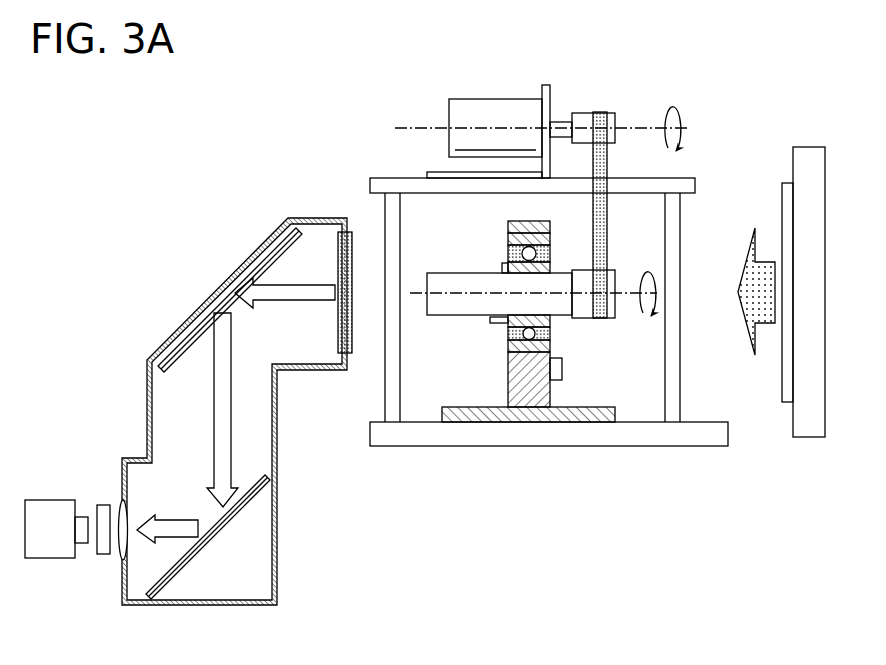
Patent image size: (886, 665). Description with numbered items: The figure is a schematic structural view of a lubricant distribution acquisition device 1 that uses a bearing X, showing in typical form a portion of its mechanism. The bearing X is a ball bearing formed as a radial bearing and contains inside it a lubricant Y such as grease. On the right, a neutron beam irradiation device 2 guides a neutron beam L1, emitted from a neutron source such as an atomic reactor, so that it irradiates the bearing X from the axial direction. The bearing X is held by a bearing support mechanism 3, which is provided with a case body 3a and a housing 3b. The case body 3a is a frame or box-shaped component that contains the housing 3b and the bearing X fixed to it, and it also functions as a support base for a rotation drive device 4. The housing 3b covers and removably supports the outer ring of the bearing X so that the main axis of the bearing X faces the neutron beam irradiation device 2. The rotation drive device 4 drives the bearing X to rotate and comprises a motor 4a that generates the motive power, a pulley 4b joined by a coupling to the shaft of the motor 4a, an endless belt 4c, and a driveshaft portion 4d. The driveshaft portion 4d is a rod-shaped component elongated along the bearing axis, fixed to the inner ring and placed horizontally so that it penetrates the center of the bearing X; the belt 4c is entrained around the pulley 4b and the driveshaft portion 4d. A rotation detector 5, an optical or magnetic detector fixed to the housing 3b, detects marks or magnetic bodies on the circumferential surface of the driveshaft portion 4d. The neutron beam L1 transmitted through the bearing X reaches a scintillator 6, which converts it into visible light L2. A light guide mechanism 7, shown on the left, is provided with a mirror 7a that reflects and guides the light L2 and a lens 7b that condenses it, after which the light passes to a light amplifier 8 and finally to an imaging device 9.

The lubricant distribution acquisition device 1 is at (564, 264).
The neutron beam irradiation device 2 is at (812, 147).
The bearing support mechanism 3 is at (700, 458).
The case body 3a is at (680, 390).
The housing 3b is at (530, 407).
The rotation drive device 4 is at (541, 190).
The motor 4a is at (500, 99).
The pulley 4b is at (613, 118).
The belt 4c is at (603, 223).
The driveshaft portion 4d is at (613, 302).
The rotation detector 5 is at (562, 368).
The scintillator 6 is at (350, 247).
The light guide mechanism 7 is at (176, 310).
The mirror 7a is at (228, 292).
The lens 7b is at (128, 517).
The light amplifier 8 is at (105, 554).
The imaging device 9 is at (43, 500).
The bearing X is at (497, 251).
The lubricant Y is at (545, 253).
The neutron beam L1 is at (768, 328).
The light L2 is at (287, 302).